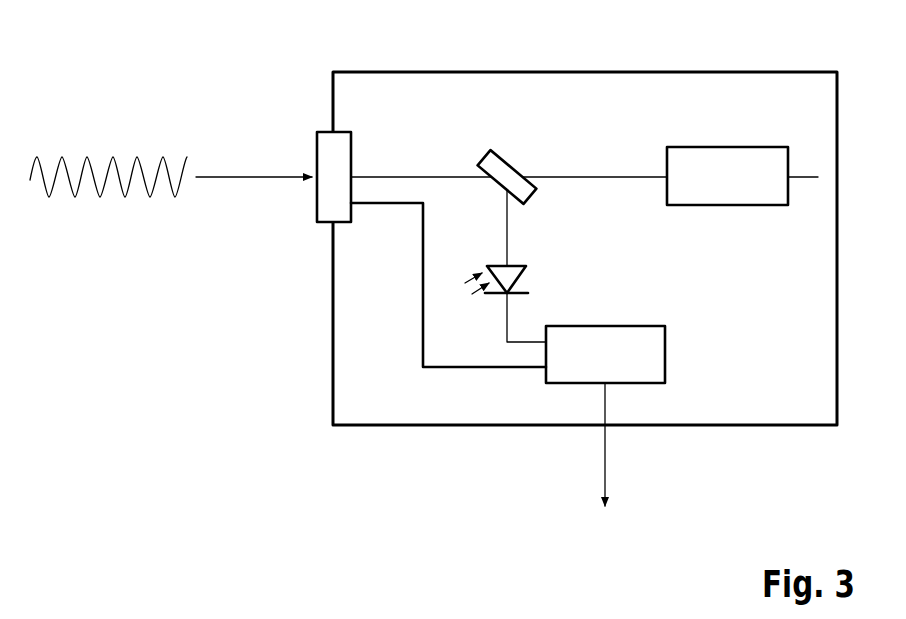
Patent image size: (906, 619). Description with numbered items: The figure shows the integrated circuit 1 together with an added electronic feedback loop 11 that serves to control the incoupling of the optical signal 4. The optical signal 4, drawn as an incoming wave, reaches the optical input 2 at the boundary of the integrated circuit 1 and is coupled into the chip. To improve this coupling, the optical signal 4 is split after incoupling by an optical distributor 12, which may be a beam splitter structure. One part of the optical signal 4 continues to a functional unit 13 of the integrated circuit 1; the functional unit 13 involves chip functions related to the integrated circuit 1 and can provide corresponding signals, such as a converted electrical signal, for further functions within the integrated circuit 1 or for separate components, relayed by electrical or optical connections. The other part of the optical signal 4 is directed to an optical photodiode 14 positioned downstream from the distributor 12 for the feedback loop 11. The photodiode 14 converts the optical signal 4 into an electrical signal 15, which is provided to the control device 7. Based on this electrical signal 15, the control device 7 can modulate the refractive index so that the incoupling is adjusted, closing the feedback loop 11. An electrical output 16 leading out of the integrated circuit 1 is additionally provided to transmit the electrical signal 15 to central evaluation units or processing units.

The integrated circuit 1 is at (718, 427).
The optical input 2 is at (312, 172).
The optical signal 4 is at (167, 160).
The control device 7 is at (666, 355).
The feedback loop 11 is at (525, 252).
The optical distributor 12 is at (519, 165).
The functional unit 13 is at (725, 147).
The optical photodiode 14 is at (522, 282).
The electrical signal 15 is at (421, 287).
The electrical output 16 is at (610, 433).